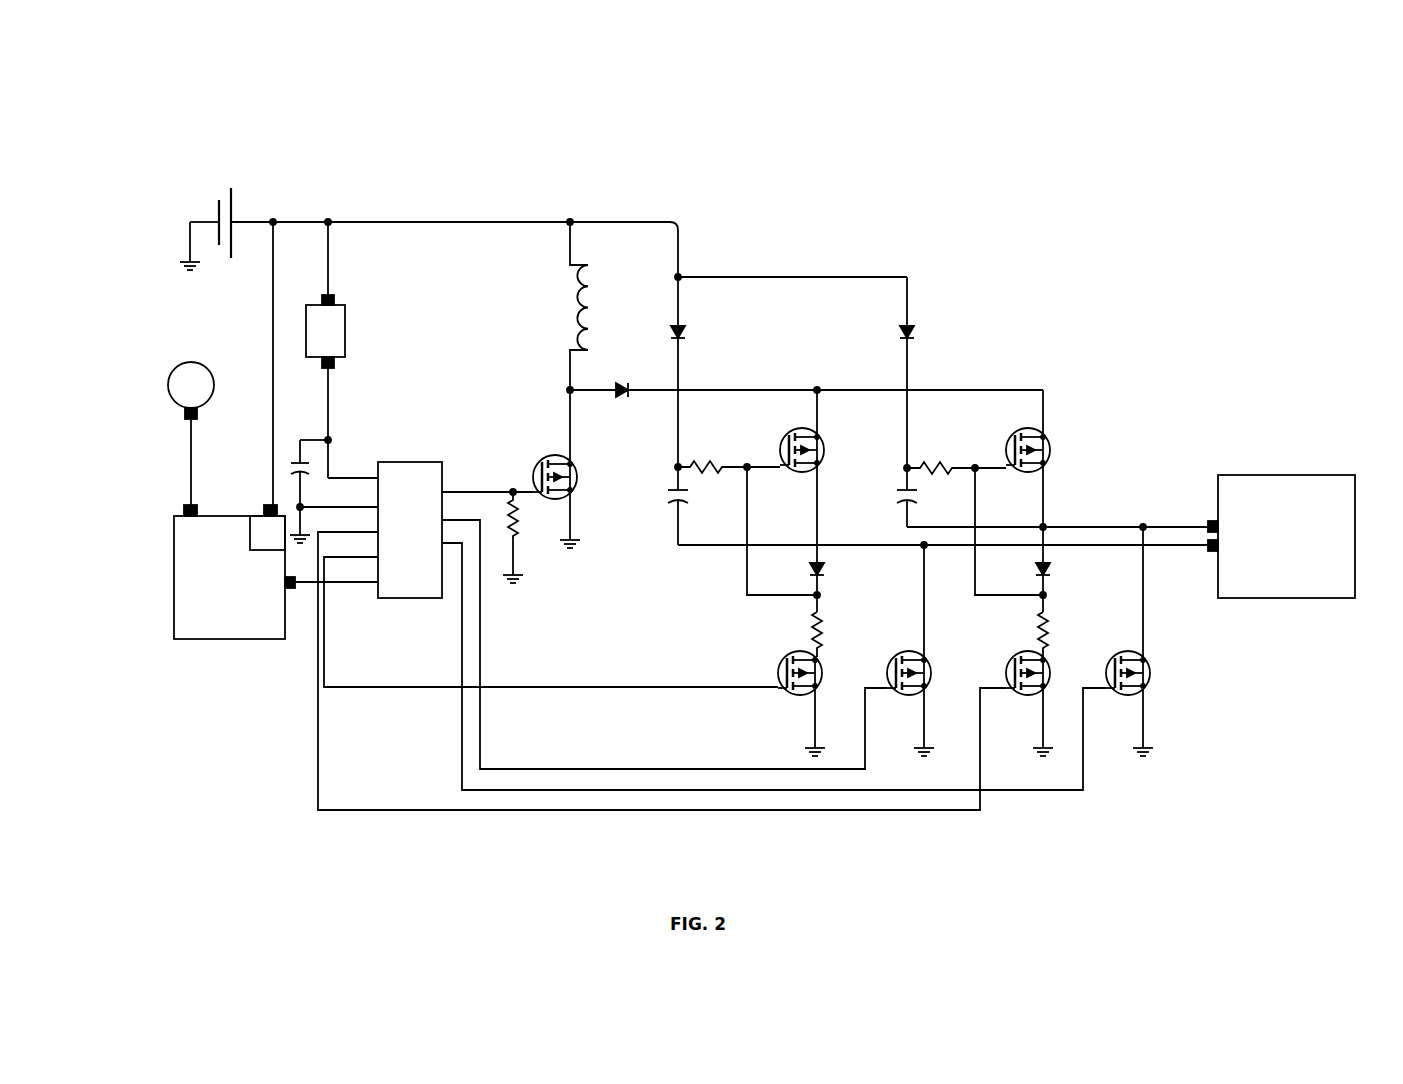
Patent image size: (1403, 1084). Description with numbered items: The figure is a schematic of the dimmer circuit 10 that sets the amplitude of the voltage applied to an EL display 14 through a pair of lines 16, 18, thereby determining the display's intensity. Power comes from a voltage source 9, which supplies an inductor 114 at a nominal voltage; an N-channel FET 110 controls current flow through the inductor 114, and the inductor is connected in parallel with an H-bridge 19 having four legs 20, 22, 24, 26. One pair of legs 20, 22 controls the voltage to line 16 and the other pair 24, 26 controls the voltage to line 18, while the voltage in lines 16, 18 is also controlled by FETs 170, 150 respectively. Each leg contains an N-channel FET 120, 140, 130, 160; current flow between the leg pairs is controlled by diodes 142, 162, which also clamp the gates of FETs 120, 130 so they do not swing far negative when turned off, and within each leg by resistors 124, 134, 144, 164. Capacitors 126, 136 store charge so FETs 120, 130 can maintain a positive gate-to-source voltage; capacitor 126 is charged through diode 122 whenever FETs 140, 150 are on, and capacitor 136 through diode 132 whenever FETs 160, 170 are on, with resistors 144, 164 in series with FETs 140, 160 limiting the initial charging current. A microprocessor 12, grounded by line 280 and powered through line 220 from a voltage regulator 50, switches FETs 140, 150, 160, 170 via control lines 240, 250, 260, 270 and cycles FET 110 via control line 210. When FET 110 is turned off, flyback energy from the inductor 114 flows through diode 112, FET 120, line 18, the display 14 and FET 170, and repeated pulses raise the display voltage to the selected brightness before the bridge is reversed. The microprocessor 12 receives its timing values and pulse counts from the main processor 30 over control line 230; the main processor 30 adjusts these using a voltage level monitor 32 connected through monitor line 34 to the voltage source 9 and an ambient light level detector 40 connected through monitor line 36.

The voltage source 9 is at (232, 205).
The dimmer circuit 10 is at (586, 100).
The microprocessor 12 is at (399, 545).
The EL display 14 is at (1276, 547).
The line 16 is at (1195, 524).
The line 18 is at (1195, 552).
The H-bridge 19 is at (963, 255).
The leg 20 is at (815, 365).
The leg 22 is at (842, 748).
The leg 24 is at (1038, 370).
The leg 26 is at (1070, 748).
The main processor 30 is at (218, 594).
The voltage level monitor 32 is at (279, 542).
The monitor line 34 is at (273, 312).
The monitor line 36 is at (191, 464).
The ambient light level detector 40 is at (180, 395).
The voltage regulator 50 is at (315, 341).
The N-channel FET 110 is at (541, 463).
The diode 112 is at (630, 382).
The inductor 114 is at (588, 300).
The N-channel FET 120 is at (828, 450).
The diode 122 is at (686, 333).
The resistor 124 is at (710, 460).
The capacitor 126 is at (668, 495).
The N-channel FET 130 is at (1054, 450).
The diode 132 is at (917, 334).
The resistor 134 is at (938, 462).
The capacitor 136 is at (897, 495).
The N-channel FET 140 is at (782, 660).
The diode 142 is at (826, 572).
The resistor 144 is at (826, 627).
The N-channel FET 150 is at (932, 662).
The N-channel FET 160 is at (1008, 660).
The diode 162 is at (1052, 572).
The resistor 164 is at (1052, 627).
The N-channel FET 170 is at (1152, 664).
The control line 210 is at (448, 490).
The line 220 is at (374, 482).
The control line 230 is at (374, 582).
The control line 240 is at (374, 557).
The control line 250 is at (446, 520).
The control line 260 is at (374, 532).
The control line 270 is at (446, 543).
The line 280 is at (374, 506).